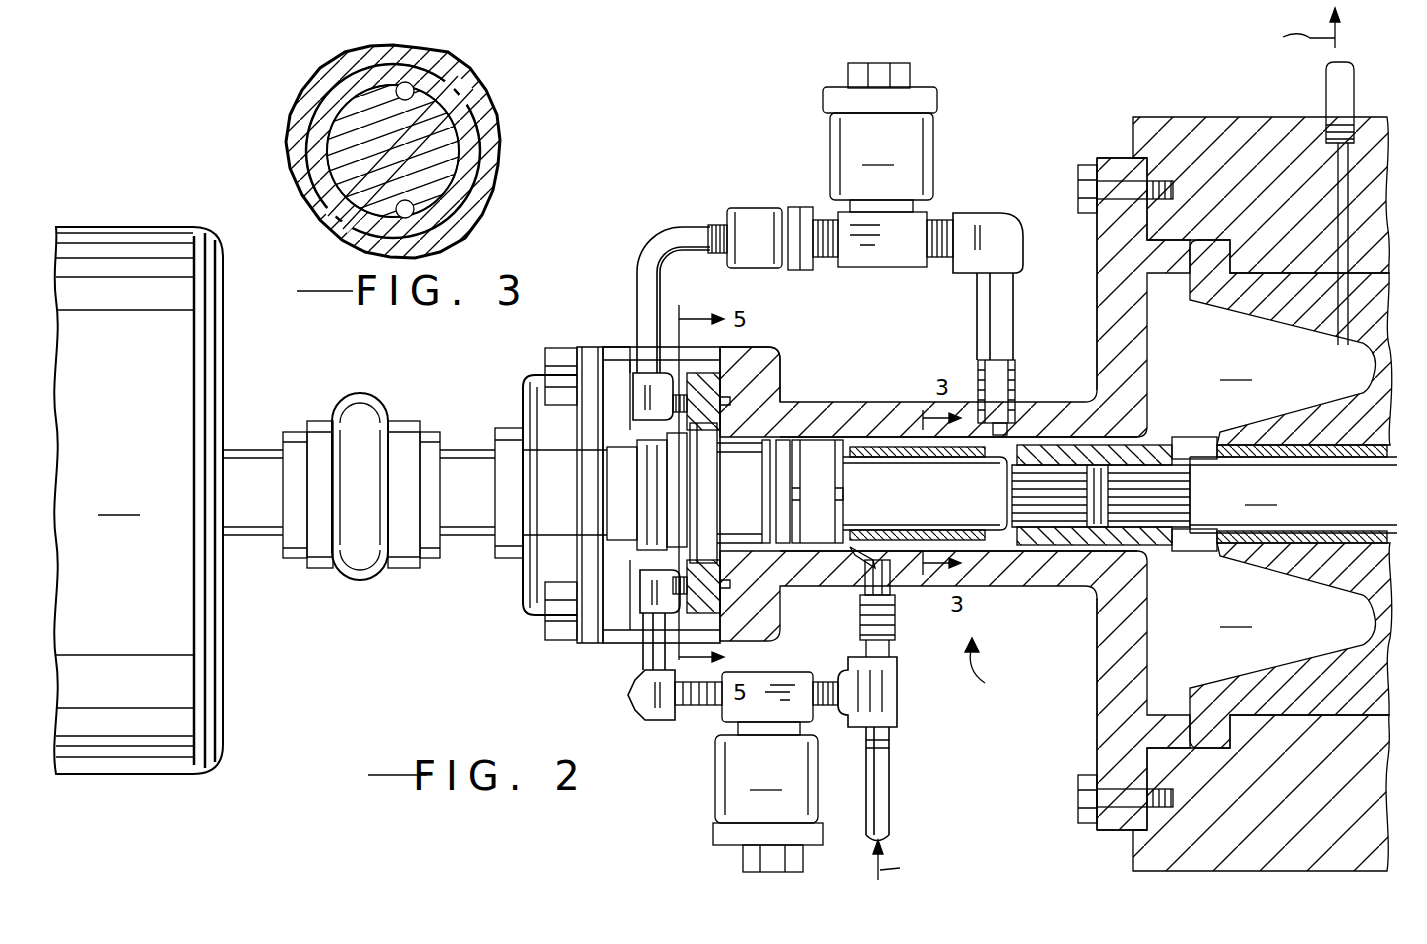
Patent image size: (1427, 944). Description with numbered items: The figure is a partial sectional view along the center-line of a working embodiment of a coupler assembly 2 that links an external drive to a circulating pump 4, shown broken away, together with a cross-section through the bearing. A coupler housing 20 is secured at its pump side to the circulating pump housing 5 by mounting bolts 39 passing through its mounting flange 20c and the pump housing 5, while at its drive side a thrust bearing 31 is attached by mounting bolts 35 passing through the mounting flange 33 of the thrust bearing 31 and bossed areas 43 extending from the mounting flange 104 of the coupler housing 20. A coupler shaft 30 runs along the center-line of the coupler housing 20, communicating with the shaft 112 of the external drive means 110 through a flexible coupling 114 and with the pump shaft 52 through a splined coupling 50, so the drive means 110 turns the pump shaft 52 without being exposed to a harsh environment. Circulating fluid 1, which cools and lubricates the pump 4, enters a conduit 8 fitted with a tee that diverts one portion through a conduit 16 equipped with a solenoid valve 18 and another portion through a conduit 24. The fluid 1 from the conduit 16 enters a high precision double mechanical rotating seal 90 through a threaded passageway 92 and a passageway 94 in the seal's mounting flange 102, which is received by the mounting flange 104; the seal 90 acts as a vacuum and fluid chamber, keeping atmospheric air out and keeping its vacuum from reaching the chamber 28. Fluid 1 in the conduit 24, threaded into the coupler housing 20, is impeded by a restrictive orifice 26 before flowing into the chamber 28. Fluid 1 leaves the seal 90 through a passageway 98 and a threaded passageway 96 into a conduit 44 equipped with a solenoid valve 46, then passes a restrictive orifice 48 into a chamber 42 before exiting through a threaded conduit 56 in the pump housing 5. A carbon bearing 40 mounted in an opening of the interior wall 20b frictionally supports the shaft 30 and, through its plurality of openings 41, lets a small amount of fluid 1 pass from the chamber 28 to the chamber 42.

In FIG. 2, the circulating fluid 1 is at (1106, 446).
In FIG. 2, the drive assembly 2 is at (985, 671).
In FIG. 2, the circulating pump 4 is at (1125, 850).
In FIG. 2, the circulating pump housing 5 is at (1203, 136).
In FIG. 2, the conduit 8 is at (893, 773).
In FIG. 2, the conduit 16 is at (822, 712).
In FIG. 2, the solenoid valve 18 is at (768, 797).
In FIG. 3, the coupler housing 20 is at (300, 95).
In FIG. 2, the coupler housing 20 is at (1007, 586).
In FIG. 3, the interior wall 20b is at (292, 137).
In FIG. 2, the interior wall 20b is at (880, 417).
In FIG. 2, the mounting flange 20c is at (1097, 258).
In FIG. 2, the conduit 24 is at (893, 613).
In FIG. 2, the restrictive orifice 26 is at (850, 557).
In FIG. 2, the chamber 28 is at (826, 542).
In FIG. 3, the coupler shaft 30 is at (437, 148).
In FIG. 2, the coupler shaft 30 is at (467, 507).
In FIG. 2, the thrust bearing 31 is at (552, 548).
In FIG. 2, the mounting flange 33 is at (587, 627).
In FIG. 2, the mounting bolts 35 is at (547, 363).
In FIG. 2, the mounting bolts 39 is at (1078, 185).
In FIG. 3, the carbon bearing 40 is at (462, 120).
In FIG. 2, the carbon bearing 40 is at (905, 452).
In FIG. 3, the openings 41 is at (407, 90).
In FIG. 2, the chamber 42 is at (1291, 494).
In FIG. 2, the spaces or bossed areas 43 is at (627, 343).
In FIG. 2, the conduit 44 is at (633, 282).
In FIG. 2, the solenoid valve 46 is at (880, 165).
In FIG. 2, the restrictive orifice 48 is at (1025, 440).
In FIG. 2, the splined coupling 50 is at (1160, 548).
In FIG. 2, the pump shaft 52 is at (1293, 495).
In FIG. 2, the threaded conduit 56 is at (1326, 95).
In FIG. 2, the double mechanical rotating seal 90 is at (847, 440).
In FIG. 2, the threaded passageway 92 is at (740, 515).
In FIG. 2, the passageway 94 is at (722, 588).
In FIG. 2, the threaded passageway 96 is at (735, 358).
In FIG. 2, the passageway 98 is at (725, 398).
In FIG. 2, the mounting flange 102 is at (708, 476).
In FIG. 2, the mounting flange 104 is at (763, 345).
In FIG. 2, the external drive means 110 is at (138, 500).
In FIG. 2, the shaft 112 is at (257, 503).
In FIG. 2, the flexible coupling 114 is at (357, 590).